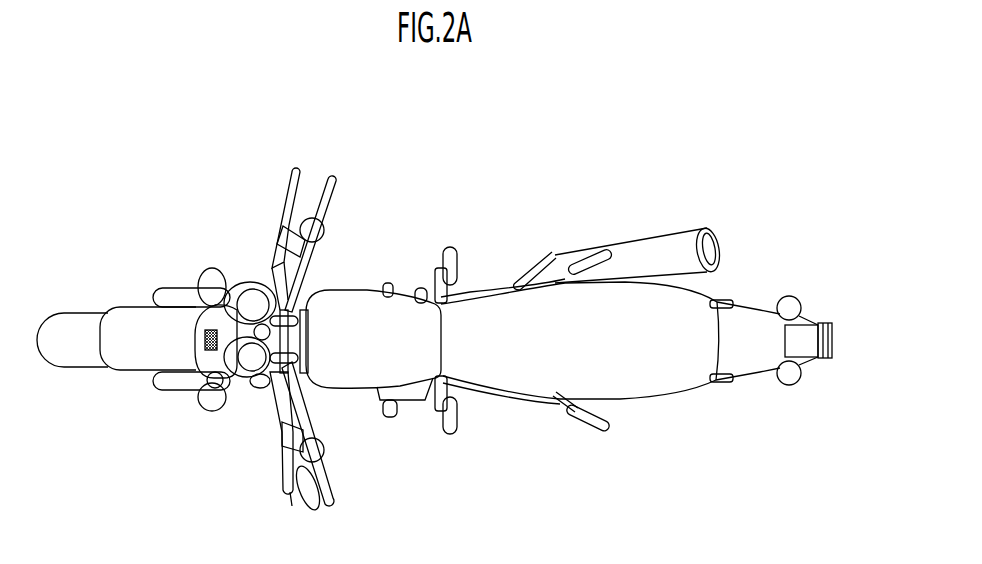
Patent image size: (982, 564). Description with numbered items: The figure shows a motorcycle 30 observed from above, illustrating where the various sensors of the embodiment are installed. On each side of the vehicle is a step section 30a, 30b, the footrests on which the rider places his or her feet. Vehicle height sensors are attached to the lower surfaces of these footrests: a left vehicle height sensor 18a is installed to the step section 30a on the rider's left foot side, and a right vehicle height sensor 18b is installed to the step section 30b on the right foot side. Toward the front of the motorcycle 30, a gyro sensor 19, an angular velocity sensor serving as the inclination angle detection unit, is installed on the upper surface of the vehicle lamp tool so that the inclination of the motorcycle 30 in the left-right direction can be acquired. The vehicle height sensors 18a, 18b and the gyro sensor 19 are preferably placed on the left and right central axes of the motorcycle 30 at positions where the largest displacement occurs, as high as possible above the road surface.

The gyro sensor 19 is at (190, 333).
The left vehicle height sensor 18a is at (434, 421).
The right vehicle height sensor 18b is at (436, 262).
The motorcycle 30 is at (535, 296).
The step section 30a is at (452, 434).
The step section 30b is at (449, 246).